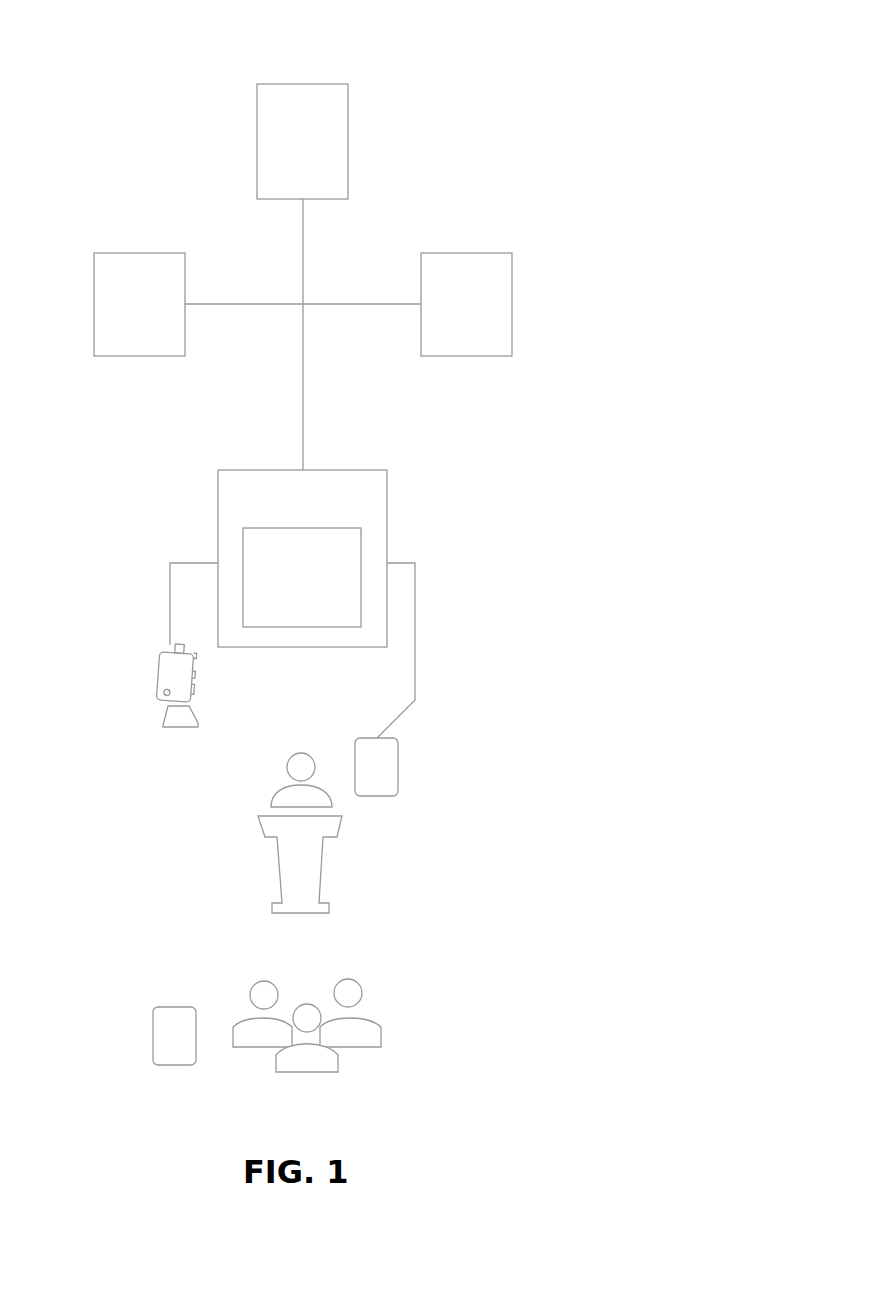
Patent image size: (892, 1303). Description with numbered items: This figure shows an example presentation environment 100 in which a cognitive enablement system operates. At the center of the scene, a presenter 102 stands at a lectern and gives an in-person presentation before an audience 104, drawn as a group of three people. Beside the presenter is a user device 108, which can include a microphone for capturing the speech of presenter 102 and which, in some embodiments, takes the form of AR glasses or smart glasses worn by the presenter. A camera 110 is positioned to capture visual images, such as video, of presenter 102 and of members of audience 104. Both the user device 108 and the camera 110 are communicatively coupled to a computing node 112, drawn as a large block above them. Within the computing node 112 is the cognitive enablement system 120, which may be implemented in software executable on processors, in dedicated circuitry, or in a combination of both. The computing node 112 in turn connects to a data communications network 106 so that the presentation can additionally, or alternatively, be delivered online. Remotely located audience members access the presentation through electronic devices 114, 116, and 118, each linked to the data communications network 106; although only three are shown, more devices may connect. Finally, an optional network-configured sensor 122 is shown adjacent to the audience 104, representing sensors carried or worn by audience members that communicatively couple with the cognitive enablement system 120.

The presentation environment 100 is at (701, 41).
The presenter 102 is at (271, 805).
The audience 104 is at (387, 983).
The data communications network 106 is at (303, 425).
The user device 108 is at (400, 770).
The camera 110 is at (158, 680).
The computing node 112 is at (282, 512).
The electronic device 114 is at (118, 319).
The electronic device 116 is at (445, 319).
The electronic device 118 is at (282, 154).
The cognitive enablement system 120 is at (282, 590).
The network-configured sensors 122 is at (153, 1038).